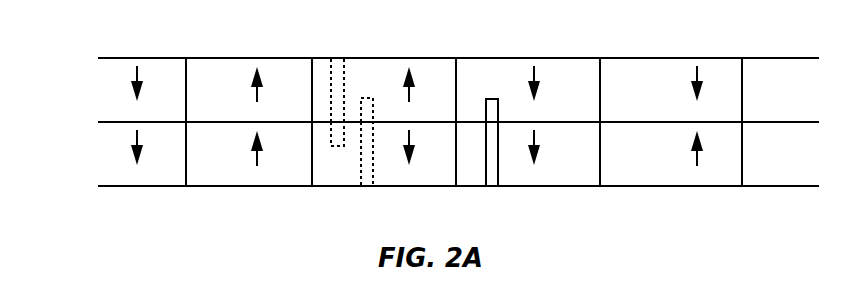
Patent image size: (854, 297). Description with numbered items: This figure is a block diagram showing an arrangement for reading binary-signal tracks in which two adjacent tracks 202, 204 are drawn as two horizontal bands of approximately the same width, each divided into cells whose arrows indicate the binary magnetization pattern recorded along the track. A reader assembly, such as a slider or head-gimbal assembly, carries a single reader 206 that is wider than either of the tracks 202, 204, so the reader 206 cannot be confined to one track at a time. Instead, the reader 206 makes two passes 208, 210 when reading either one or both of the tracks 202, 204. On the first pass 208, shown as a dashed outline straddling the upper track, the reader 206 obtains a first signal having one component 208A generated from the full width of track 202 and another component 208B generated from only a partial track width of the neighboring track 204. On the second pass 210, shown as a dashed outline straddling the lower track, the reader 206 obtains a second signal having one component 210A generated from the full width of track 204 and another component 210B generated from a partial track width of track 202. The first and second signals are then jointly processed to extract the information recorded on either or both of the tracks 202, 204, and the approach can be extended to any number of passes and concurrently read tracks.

The track 202 is at (92, 58).
The track 204 is at (92, 122).
The reader 206 is at (490, 180).
The first pass 208 is at (289, 112).
The first signal component 208A is at (336, 62).
The first signal component from partial track 208B is at (340, 142).
The second pass 210 is at (363, 140).
The second signal component 210A is at (365, 175).
The second signal component from partial track 210B is at (367, 102).